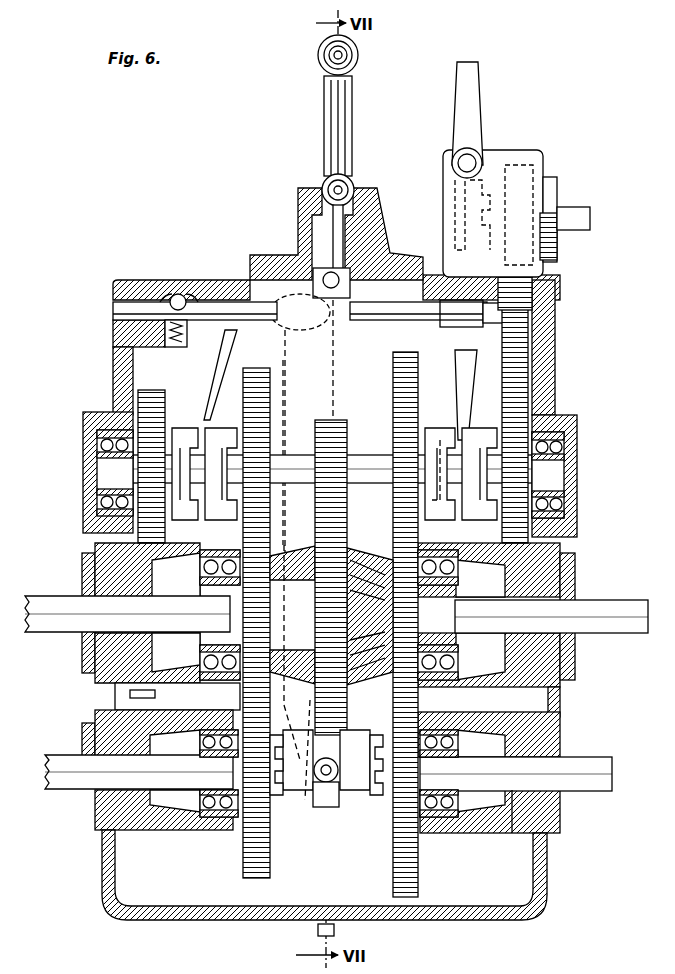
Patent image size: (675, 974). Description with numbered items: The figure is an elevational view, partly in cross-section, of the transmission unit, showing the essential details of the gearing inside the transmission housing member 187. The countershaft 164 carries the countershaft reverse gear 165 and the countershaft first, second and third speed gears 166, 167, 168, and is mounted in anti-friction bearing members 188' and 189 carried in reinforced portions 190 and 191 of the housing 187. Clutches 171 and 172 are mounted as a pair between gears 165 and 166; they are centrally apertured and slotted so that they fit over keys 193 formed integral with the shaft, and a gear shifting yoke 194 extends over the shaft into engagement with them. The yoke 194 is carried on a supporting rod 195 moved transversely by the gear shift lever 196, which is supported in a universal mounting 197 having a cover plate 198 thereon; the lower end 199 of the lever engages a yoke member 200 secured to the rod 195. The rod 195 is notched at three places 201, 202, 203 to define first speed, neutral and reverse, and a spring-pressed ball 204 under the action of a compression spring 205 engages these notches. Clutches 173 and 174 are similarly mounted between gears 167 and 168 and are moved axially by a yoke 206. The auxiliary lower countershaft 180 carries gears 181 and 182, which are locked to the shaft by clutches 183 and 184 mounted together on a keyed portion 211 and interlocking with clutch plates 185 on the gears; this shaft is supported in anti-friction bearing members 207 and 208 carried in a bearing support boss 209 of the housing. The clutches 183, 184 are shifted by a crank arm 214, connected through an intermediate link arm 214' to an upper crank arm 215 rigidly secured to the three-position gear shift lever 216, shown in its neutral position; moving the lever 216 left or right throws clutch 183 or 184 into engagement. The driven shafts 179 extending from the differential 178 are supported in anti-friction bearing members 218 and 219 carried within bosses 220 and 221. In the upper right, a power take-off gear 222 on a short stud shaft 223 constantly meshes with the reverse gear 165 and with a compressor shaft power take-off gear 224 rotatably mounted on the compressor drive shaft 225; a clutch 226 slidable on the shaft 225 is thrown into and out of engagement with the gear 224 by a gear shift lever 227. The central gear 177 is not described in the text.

The countershaft 164 is at (100, 477).
The countershaft reverse gear 165 is at (503, 398).
The countershaft first speed gear 166 is at (395, 384).
The countershaft second speed gear 167 is at (240, 386).
The countershaft third speed gear 168 is at (173, 392).
The clutch 171 is at (472, 432).
The clutch 172 is at (448, 432).
The clutch 173 is at (218, 430).
The clutch 174 is at (195, 427).
The gear 177 is at (312, 537).
The differential 178 is at (298, 578).
The driven shafts 179 is at (62, 605).
The second countershaft 180 is at (58, 776).
The countershaft gear 181 is at (395, 870).
The countershaft gear 182 is at (271, 862).
The clutch 183 is at (345, 792).
The clutch 184 is at (302, 792).
The clutch plates 185 is at (228, 850).
The transmission housing member 187 is at (160, 920).
The anti-friction bearing member 188' is at (568, 449).
The anti-friction bearing member 189 is at (108, 440).
The reinforced portion 190 is at (573, 420).
The reinforced portion 191 is at (85, 430).
The keys 193 is at (435, 507).
The gear shifting yoke 194 is at (448, 395).
The supporting rod 195 is at (418, 322).
The gear shift lever 196 is at (326, 150).
The universal mounting 197 is at (300, 196).
The housing boss 198 is at (362, 188).
The lower end 199 is at (345, 252).
The yoke member 200 is at (350, 280).
The notch 201 is at (192, 300).
The notch 202 is at (178, 294).
The notch 203 is at (163, 296).
The spring-pressed ball 204 is at (187, 325).
The compression spring 205 is at (140, 338).
The yoke 206 is at (224, 363).
The anti-friction bearing member 207 is at (515, 833).
The anti-friction bearing member 208 is at (194, 794).
The bearing support boss 209 is at (445, 834).
The keyed portion 211 is at (276, 800).
The crank arm 214 is at (297, 672).
The intermediate link arm 214' is at (308, 452).
The upper crank arm 215 is at (309, 430).
The gear shift lever 216 is at (352, 96).
The anti-friction bearing member 218 is at (438, 615).
The anti-friction bearing member 219 is at (220, 615).
The boss 220 is at (445, 690).
The boss 221 is at (168, 699).
The gear 222 is at (500, 282).
The stud shaft 223 is at (493, 326).
The compressor shaft power take-off gear 224 is at (545, 172).
The compressor drive shaft 225 is at (572, 212).
The clutch 226 is at (484, 190).
The gear shift lever 227 is at (480, 98).